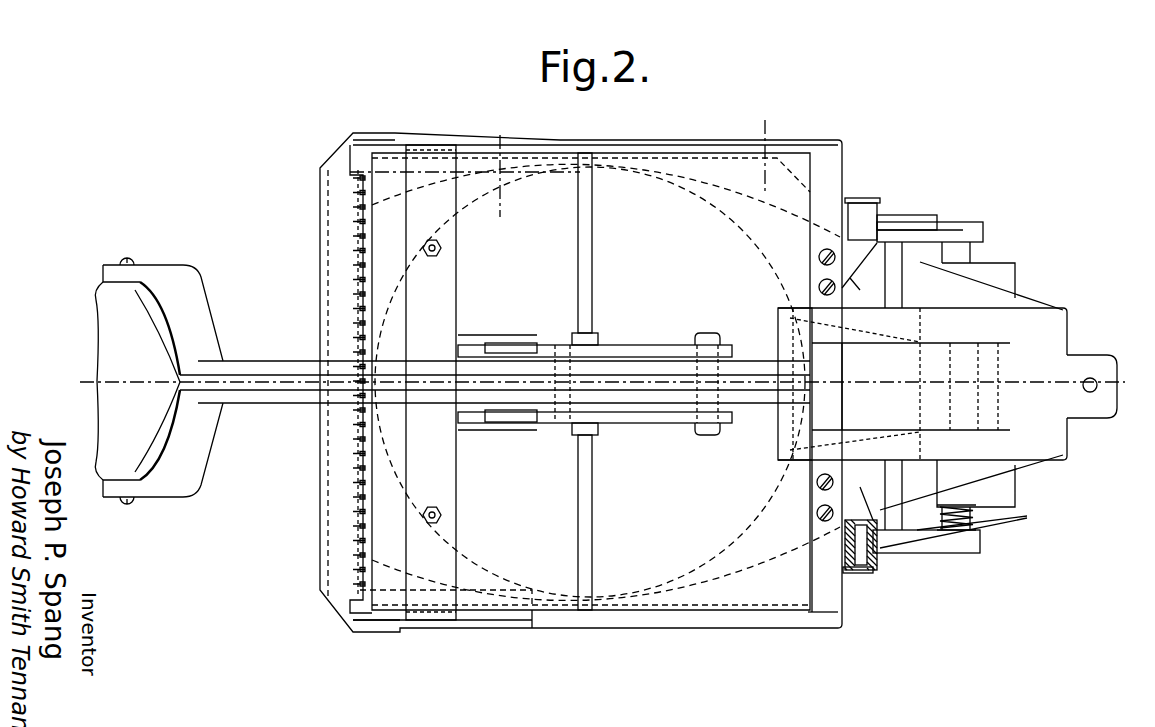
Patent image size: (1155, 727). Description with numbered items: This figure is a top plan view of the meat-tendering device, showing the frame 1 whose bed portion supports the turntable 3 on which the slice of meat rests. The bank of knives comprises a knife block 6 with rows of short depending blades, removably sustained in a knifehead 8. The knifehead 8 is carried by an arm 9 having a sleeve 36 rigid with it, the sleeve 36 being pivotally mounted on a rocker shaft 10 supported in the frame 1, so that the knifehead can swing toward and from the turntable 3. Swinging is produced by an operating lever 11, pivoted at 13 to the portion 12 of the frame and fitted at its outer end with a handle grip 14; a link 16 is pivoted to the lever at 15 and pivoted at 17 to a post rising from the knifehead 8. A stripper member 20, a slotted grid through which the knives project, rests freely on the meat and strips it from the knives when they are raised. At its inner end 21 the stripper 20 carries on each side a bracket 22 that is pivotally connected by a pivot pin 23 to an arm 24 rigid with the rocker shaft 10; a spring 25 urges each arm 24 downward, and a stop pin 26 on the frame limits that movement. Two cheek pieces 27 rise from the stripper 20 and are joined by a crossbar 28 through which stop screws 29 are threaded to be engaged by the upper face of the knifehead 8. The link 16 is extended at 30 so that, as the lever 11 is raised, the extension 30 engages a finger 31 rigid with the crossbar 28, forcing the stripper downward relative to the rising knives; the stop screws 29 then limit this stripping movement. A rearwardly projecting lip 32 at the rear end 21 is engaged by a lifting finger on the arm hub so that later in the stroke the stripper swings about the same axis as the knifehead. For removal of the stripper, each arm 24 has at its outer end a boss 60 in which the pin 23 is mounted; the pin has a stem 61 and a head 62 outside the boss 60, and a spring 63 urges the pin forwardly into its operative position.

The frame 1 is at (1032, 320).
The turntable 3 is at (597, 251).
The knife block 6 is at (345, 535).
The knifehead 8 is at (790, 157).
The arm 9 is at (812, 468).
The rocker shaft 10 is at (985, 245).
The operating lever 11 is at (276, 361).
The portion of the frame 12 is at (892, 312).
The pivot 13 is at (775, 320).
The handle grip 14 is at (115, 328).
The pivot 15 is at (692, 346).
The link 16 is at (642, 425).
The pivot 17 is at (556, 405).
The stripper member 20 is at (328, 262).
The inner end of the stripper 21 is at (828, 572).
The bracket 22 is at (864, 381).
The pivot pin 23 is at (822, 505).
The arm 24 is at (930, 550).
The spring 25 is at (927, 537).
The stop pin 26 is at (873, 555).
The cheek piece 27 is at (385, 630).
The crossbar 28 is at (413, 298).
The stop screw 29 is at (423, 519).
The extension of the link 30 is at (512, 422).
The finger 31 is at (478, 432).
The lip 32 is at (885, 500).
The sleeve 36 is at (975, 256).
The boss 60 is at (880, 560).
The stem 61 is at (847, 558).
The head 62 is at (855, 574).
The spring 63 is at (866, 565).